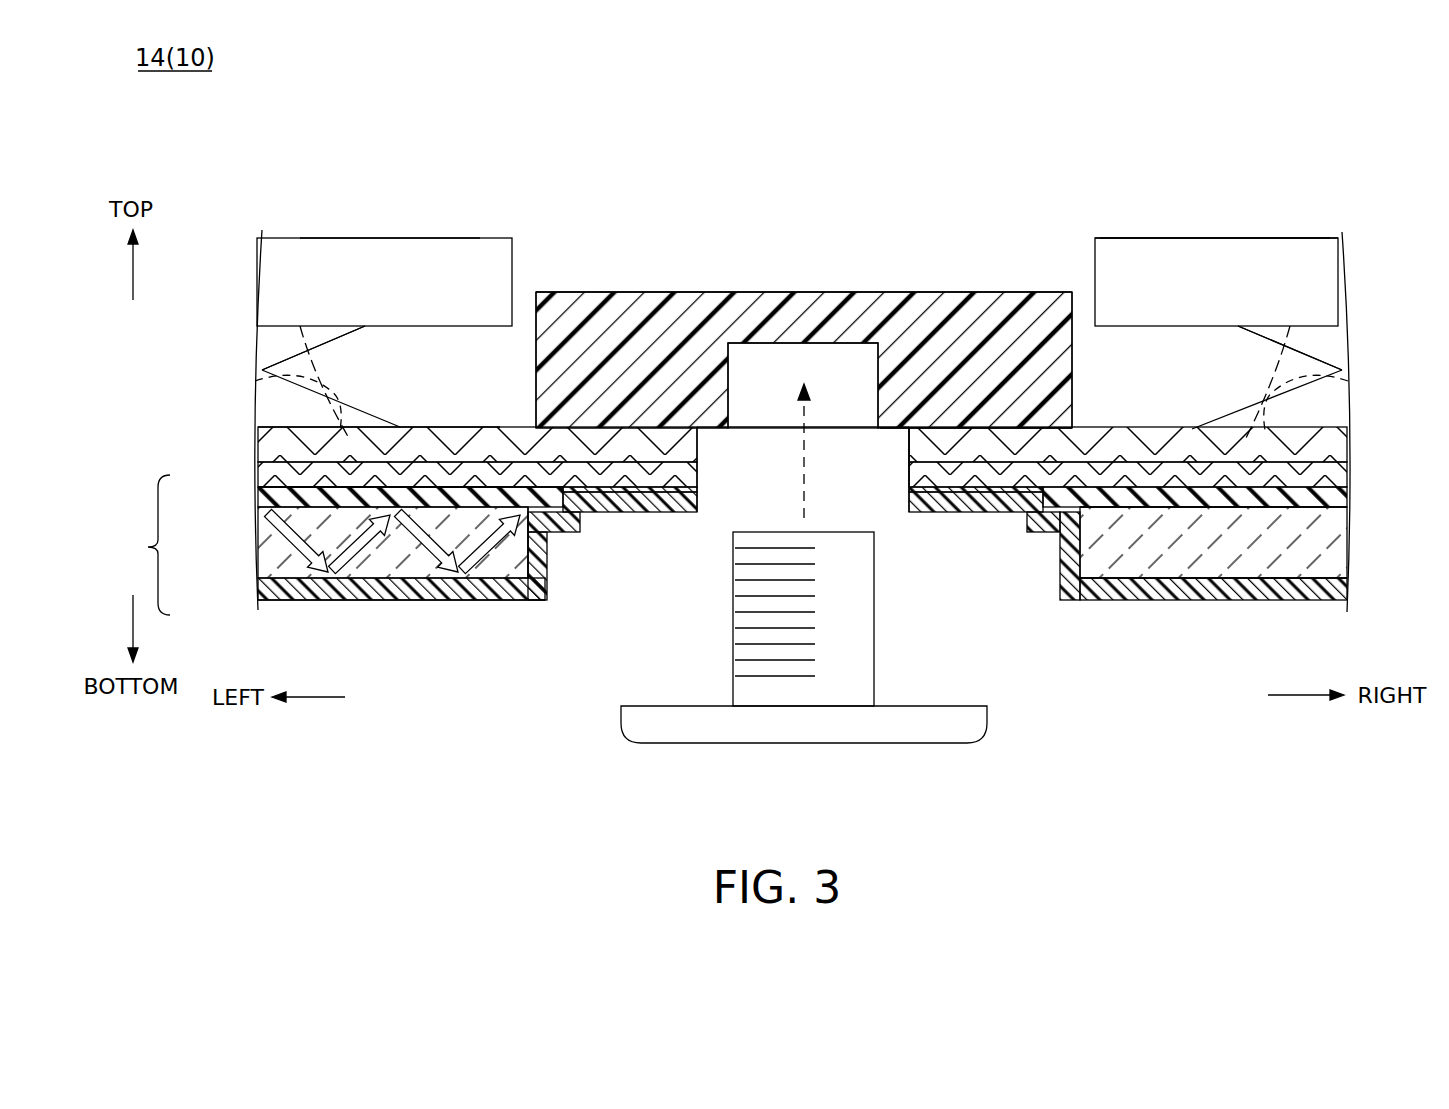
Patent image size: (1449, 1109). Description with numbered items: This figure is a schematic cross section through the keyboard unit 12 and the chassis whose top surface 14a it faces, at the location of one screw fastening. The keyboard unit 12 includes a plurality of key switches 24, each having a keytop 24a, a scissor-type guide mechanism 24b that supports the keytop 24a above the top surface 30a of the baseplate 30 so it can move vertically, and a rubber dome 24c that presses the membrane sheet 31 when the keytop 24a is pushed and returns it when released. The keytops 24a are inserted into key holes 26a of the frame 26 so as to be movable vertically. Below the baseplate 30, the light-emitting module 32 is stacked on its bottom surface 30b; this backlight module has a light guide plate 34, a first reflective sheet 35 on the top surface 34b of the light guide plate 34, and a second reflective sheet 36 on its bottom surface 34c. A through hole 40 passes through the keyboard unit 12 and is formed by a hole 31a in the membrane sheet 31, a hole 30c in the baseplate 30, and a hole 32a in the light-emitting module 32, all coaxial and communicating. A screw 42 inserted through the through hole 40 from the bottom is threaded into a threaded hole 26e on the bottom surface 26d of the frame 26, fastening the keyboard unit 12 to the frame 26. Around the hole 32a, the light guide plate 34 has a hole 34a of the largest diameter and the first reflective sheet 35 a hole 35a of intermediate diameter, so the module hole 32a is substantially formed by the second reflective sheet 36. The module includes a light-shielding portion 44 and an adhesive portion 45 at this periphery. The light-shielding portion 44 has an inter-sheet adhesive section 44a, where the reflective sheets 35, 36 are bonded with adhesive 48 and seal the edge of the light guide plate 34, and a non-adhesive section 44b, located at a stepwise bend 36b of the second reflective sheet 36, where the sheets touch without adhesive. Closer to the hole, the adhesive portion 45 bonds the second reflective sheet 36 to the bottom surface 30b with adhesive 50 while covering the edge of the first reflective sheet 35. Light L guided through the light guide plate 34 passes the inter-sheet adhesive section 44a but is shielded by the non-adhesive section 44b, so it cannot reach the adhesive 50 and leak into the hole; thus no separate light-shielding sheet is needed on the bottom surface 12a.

The keyboard unit 12 is at (1186, 176).
The bottom surface 12a is at (330, 600).
The top surface 14a is at (616, 291).
The key switch 24 is at (328, 216).
The keytop 24a is at (412, 250).
The guide mechanism 24b is at (268, 346).
The rubber dome 24c is at (262, 396).
The frame 26 is at (830, 290).
The key hole 26a is at (535, 296).
The bottom surface 26d is at (975, 432).
The threaded hole 26e is at (790, 362).
The baseplate 30 is at (1340, 476).
The top surface 30a is at (300, 450).
The bottom surface 30b is at (393, 470).
The hole 30c is at (906, 470).
The membrane sheet 31 is at (1340, 445).
The hole 31a is at (718, 426).
The light-emitting module 32 is at (139, 545).
The hole 32a is at (885, 500).
The light guide plate 34 is at (756, 601).
The hole 34a is at (545, 582).
The top surface 34b is at (1340, 497).
The bottom surface 34c is at (1340, 584).
The first reflective sheet 35 is at (256, 496).
The hole 35a is at (565, 468).
The second reflective sheet 36 is at (256, 585).
The bend 36b is at (1005, 527).
The through hole 40 is at (740, 487).
The screw 42 is at (797, 728).
The light-shielding portion 44 is at (601, 608).
The inter-sheet adhesive section 44a is at (568, 590).
The non-adhesive section 44b is at (552, 648).
The adhesive portion 45 is at (645, 500).
The adhesive 48 is at (1047, 556).
The adhesive 50 is at (940, 525).
The light L is at (462, 572).